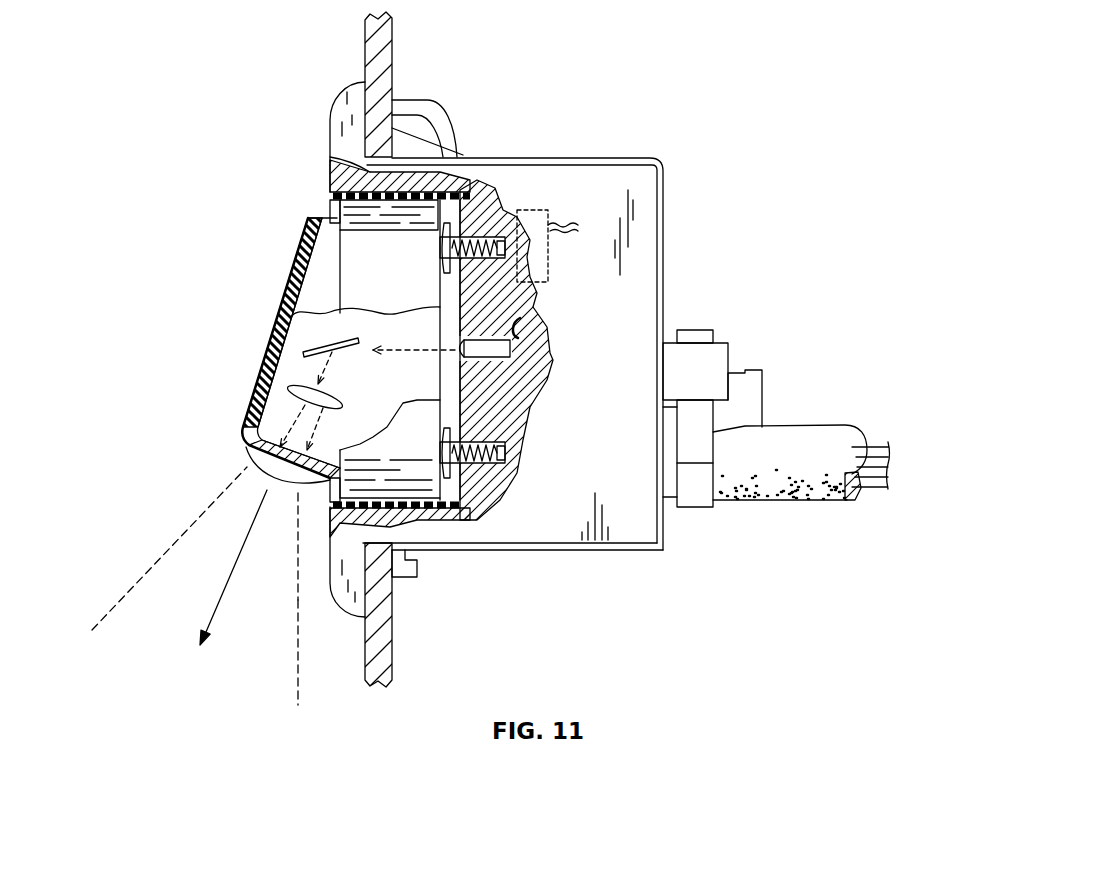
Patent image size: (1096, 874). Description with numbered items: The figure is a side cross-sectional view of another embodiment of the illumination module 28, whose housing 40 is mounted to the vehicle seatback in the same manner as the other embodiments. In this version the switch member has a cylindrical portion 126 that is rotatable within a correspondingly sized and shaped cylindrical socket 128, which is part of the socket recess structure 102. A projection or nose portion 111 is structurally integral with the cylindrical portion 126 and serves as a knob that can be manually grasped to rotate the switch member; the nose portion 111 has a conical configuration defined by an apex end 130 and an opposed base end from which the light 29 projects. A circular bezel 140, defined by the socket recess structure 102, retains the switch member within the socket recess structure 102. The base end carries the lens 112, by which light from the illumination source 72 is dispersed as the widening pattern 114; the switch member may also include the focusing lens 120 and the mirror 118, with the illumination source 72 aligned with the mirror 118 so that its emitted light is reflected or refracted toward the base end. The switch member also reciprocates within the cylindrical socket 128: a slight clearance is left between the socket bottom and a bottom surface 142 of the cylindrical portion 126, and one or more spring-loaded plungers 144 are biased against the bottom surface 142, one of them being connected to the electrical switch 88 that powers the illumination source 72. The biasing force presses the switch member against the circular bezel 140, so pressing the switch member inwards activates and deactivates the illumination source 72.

The illumination module 28 is at (571, 77).
The spring-loaded plungers 144 is at (443, 222).
The electrical switch 88 is at (530, 210).
The circular bezel 140 is at (333, 198).
The apex end 130 is at (300, 213).
The housing 40 is at (643, 196).
The bottom surface 142 is at (440, 290).
The mirror 118 is at (318, 343).
The nose portion 111 is at (268, 364).
The illumination source 72 is at (500, 352).
The focusing lens 120 is at (285, 390).
The lens 112 is at (268, 473).
The socket recess structure 102 is at (327, 500).
The light 29 is at (213, 603).
The cylindrical socket 128 is at (417, 513).
The cylindrical portion 126 is at (460, 515).
The widening pattern 114 is at (302, 683).